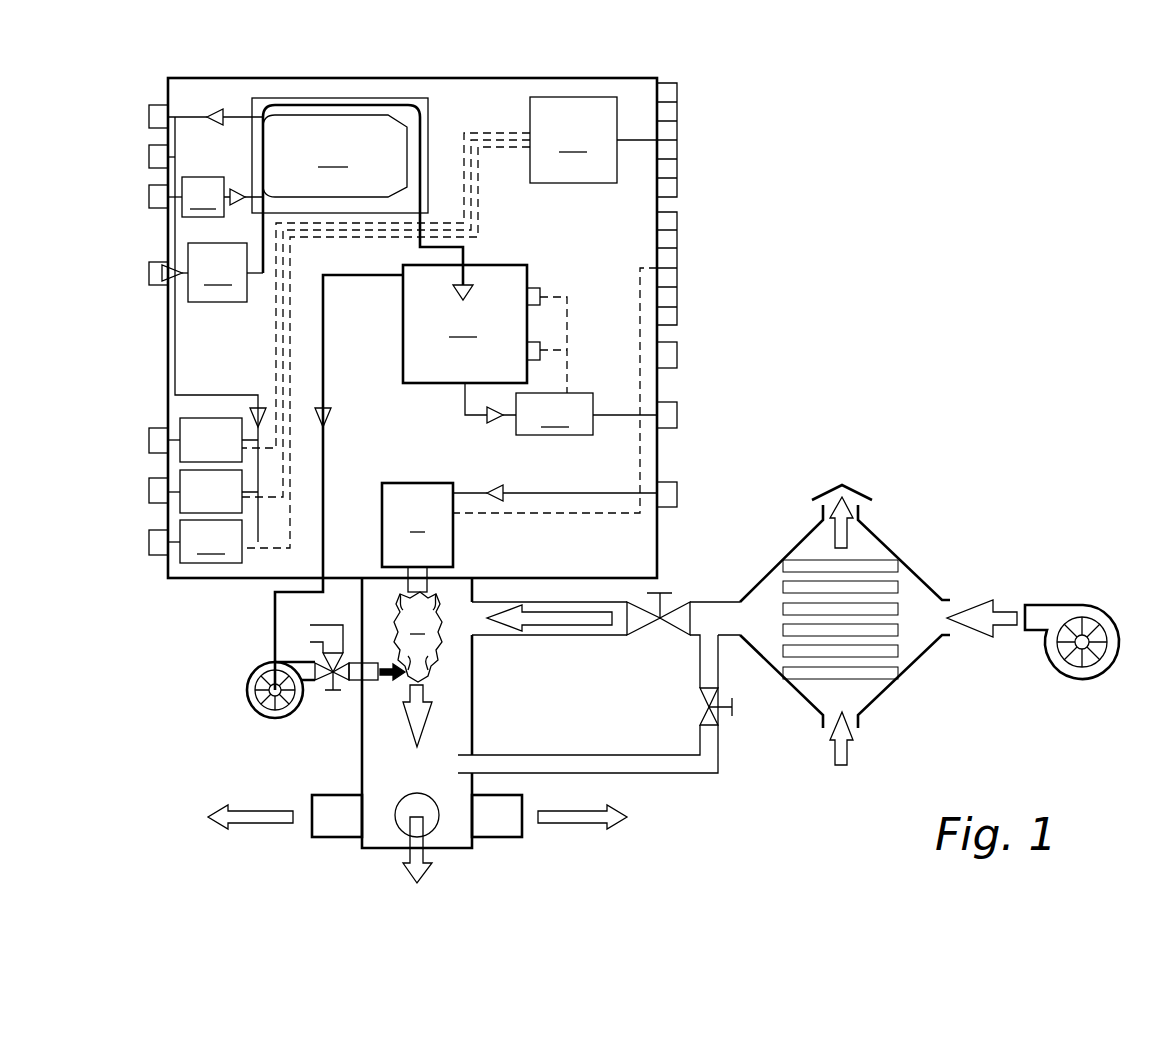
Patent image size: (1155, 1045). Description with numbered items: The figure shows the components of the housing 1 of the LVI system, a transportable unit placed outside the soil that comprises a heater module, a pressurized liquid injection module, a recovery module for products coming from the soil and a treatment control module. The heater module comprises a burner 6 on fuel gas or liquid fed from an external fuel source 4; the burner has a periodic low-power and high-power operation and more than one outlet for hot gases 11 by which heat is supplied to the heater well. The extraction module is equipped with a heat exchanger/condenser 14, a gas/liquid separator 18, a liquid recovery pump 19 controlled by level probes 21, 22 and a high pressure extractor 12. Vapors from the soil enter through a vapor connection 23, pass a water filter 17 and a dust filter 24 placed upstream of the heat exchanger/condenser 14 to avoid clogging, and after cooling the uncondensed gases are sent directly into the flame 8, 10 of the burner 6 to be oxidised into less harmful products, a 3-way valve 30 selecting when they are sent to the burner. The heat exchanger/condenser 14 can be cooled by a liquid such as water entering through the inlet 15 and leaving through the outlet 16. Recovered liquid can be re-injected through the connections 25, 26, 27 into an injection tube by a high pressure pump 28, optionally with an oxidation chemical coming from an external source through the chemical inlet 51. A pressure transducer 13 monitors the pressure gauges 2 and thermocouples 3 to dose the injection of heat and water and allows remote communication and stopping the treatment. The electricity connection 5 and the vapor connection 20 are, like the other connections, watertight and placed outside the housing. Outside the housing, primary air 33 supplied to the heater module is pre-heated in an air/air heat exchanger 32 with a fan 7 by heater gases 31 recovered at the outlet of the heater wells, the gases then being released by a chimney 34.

The housing 1 is at (168, 345).
The pressure gauges 2 is at (688, 83).
The thermocouples 3 is at (688, 212).
The external fuel source 4 is at (677, 493).
The electricity connection 5 is at (677, 355).
The burner 6 is at (417, 537).
The fan 7 is at (1078, 605).
The flame 8 is at (418, 637).
The flame 10 is at (372, 682).
The outlet for hot gases 11 is at (326, 840).
The high pressure extractor 12 is at (247, 691).
The pressure transducer 13 is at (449, 322).
The heat exchanger/condenser 14 is at (362, 199).
The inlet 15 is at (149, 197).
The outlet 16 is at (149, 117).
The water filter 17 is at (222, 197).
The gas/liquid separator 18 is at (401, 477).
The liquid recovery pump 19 is at (316, 634).
The vapor connection 20 is at (677, 415).
The level probe 21 is at (540, 290).
The level probe 22 is at (540, 346).
The vapor connection 23 is at (149, 273).
The dust filter 24 is at (225, 272).
The water connection 25 is at (149, 440).
The water connection 26 is at (149, 492).
The water connection 27 is at (149, 542).
The high pressure pump 28 is at (211, 541).
The 3-way valve 30 is at (325, 697).
The heater gases 31 is at (847, 752).
The heat exchanger 32 is at (912, 642).
The primary air 33 is at (563, 620).
The chimney 34 is at (852, 497).
The chemical inlet 51 is at (149, 157).